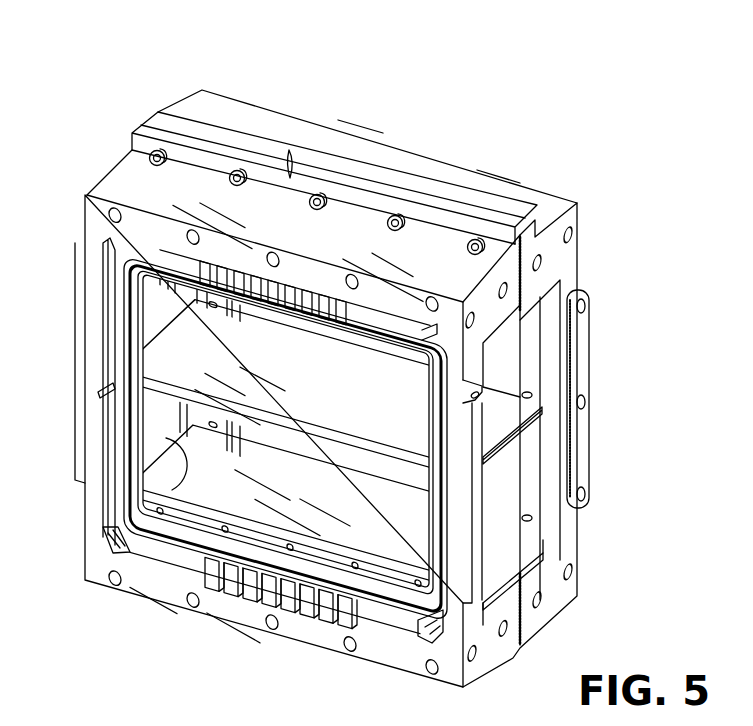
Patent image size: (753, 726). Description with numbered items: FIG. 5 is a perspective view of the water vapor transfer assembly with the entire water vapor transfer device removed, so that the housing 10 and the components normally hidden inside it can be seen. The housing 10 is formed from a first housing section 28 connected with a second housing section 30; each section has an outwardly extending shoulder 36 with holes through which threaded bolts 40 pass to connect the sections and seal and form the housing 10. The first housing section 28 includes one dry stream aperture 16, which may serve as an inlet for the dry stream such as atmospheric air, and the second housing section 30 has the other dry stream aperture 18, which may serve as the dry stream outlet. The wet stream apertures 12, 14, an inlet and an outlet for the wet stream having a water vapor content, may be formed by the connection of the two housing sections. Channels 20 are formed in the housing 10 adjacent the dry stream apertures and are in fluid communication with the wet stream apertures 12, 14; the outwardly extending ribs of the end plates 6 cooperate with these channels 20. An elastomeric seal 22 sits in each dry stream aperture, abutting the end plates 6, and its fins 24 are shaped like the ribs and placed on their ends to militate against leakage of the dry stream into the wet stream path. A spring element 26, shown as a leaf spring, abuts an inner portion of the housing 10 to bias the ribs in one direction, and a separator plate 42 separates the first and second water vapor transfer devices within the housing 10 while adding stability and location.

The housing 10 is at (123, 97).
The end plates 6 is at (404, 557).
The wet stream aperture 12 is at (521, 488).
The wet stream aperture 14 is at (166, 436).
The dry stream aperture 16 is at (188, 348).
The dry stream aperture 18 is at (503, 338).
The channels 20 is at (325, 635).
The elastomeric seals 22 is at (122, 300).
The fins 24 is at (338, 312).
The spring element 26 is at (533, 540).
The first housing section 28 is at (120, 177).
The second housing section 30 is at (231, 118).
The outwardly extending shoulder 36 is at (290, 160).
The threaded bolts 40 is at (474, 240).
The separator plate 42 is at (318, 411).